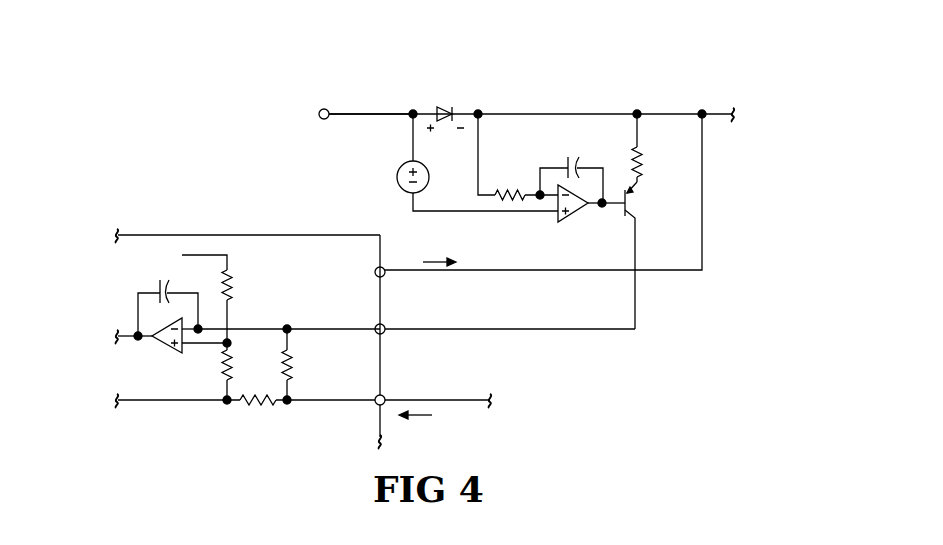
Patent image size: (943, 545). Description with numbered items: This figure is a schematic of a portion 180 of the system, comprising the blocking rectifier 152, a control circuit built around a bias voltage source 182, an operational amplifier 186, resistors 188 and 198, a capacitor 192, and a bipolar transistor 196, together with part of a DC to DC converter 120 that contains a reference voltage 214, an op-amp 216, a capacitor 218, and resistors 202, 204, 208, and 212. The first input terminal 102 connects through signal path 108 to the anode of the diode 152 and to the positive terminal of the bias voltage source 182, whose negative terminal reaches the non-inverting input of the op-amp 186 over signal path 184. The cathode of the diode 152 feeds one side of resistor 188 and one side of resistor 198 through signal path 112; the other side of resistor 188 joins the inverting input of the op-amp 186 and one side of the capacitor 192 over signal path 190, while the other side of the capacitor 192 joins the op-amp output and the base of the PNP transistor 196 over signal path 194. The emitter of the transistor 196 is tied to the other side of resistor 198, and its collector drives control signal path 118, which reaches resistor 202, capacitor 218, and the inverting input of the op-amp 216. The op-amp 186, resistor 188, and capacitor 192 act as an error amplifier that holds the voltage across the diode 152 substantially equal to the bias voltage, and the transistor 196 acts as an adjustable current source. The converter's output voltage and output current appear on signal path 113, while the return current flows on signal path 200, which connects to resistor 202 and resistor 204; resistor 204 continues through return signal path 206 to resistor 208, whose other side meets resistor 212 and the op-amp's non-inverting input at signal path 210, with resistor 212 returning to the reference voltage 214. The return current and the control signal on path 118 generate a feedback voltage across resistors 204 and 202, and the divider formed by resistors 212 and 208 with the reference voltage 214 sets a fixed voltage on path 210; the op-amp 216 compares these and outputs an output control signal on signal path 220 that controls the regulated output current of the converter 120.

The portion of system 180 is at (560, 53).
The first input terminal 102 is at (325, 108).
The signal path 108 is at (378, 111).
The blocking rectifier 152 is at (440, 106).
The signal path 112 is at (647, 112).
The bias voltage source 182 is at (400, 166).
The signal path 184 is at (478, 213).
The resistor 188 is at (507, 192).
The signal path 190 is at (538, 191).
The capacitor 192 is at (568, 160).
The operational amplifier 186 is at (575, 217).
The signal path 194 is at (612, 205).
The bipolar transistor 196 is at (627, 189).
The resistor 198 is at (645, 159).
The signal path 113 is at (540, 272).
The control signal path 118 is at (433, 328).
The signal path 200 is at (425, 398).
The DC to DC converter 120 is at (246, 235).
The reference voltage 214 is at (145, 257).
The resistor 212 is at (236, 285).
The capacitor 218 is at (157, 284).
The op-amp 216 is at (166, 352).
The Output Control Signal signal path 220 is at (122, 340).
The signal path 210 is at (238, 343).
The resistor 208 is at (222, 367).
The resistor 202 is at (299, 366).
The return signal path 206 is at (172, 401).
The resistor 204 is at (262, 401).